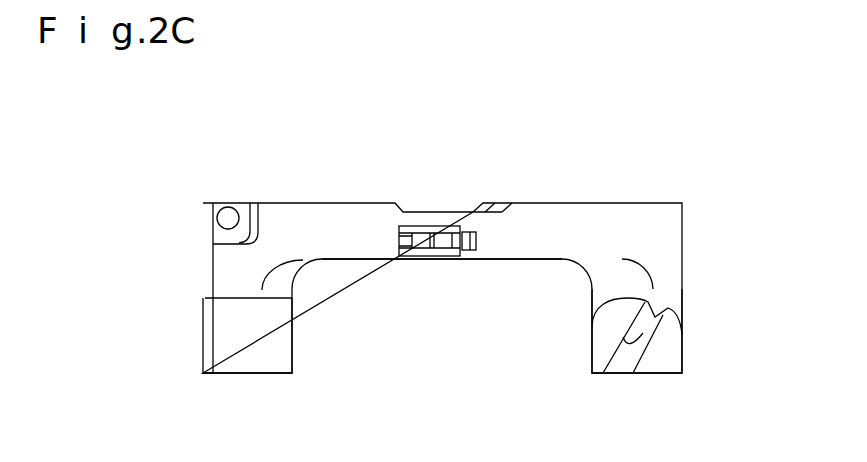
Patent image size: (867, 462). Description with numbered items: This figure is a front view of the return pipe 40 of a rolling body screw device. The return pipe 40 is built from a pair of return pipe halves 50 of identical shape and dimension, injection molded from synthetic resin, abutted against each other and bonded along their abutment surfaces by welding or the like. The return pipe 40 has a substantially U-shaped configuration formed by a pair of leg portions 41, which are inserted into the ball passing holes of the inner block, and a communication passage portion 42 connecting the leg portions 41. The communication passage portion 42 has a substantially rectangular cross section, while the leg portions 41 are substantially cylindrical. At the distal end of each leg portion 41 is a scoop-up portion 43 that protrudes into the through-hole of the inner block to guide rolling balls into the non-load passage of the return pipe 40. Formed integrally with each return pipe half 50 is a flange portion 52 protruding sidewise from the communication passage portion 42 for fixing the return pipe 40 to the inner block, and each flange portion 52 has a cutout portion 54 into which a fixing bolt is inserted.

The return pipe 40 is at (597, 158).
The leg portion 41 is at (202, 332).
The communication passage portion 42 is at (499, 259).
The scoop-up portion 43 is at (658, 357).
The return pipe half 50 is at (303, 213).
The flange portion 52 is at (398, 238).
The cutout portion 54 is at (445, 233).